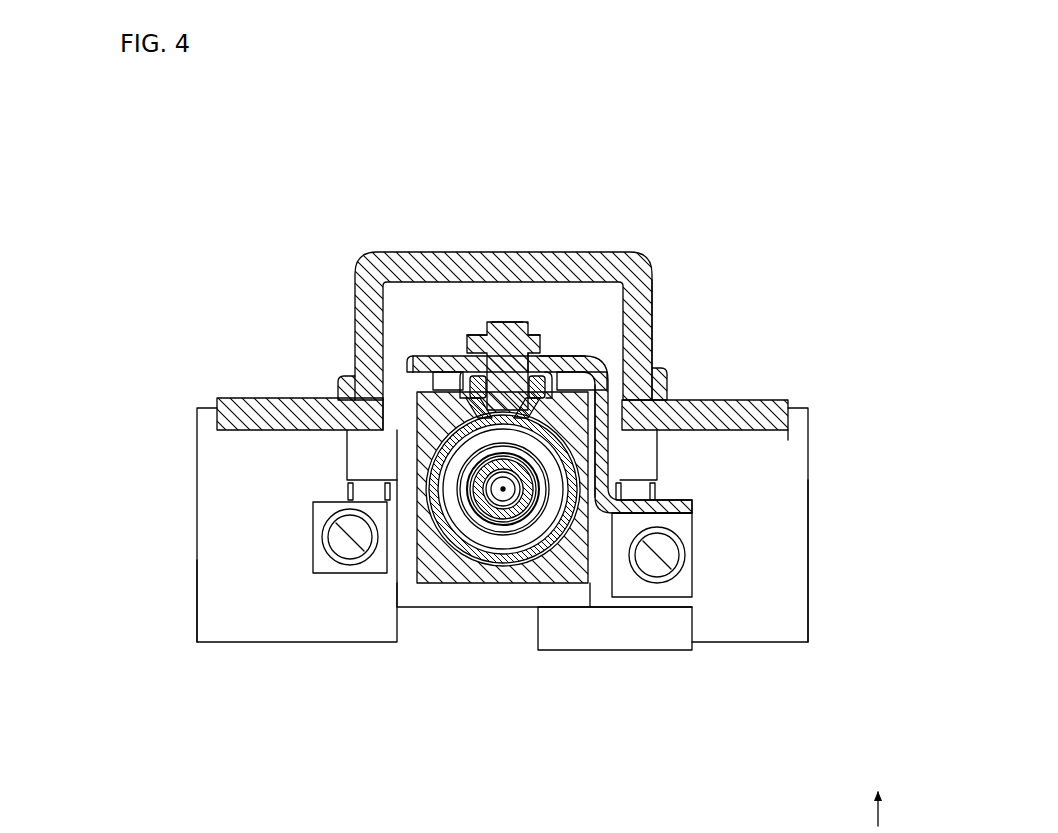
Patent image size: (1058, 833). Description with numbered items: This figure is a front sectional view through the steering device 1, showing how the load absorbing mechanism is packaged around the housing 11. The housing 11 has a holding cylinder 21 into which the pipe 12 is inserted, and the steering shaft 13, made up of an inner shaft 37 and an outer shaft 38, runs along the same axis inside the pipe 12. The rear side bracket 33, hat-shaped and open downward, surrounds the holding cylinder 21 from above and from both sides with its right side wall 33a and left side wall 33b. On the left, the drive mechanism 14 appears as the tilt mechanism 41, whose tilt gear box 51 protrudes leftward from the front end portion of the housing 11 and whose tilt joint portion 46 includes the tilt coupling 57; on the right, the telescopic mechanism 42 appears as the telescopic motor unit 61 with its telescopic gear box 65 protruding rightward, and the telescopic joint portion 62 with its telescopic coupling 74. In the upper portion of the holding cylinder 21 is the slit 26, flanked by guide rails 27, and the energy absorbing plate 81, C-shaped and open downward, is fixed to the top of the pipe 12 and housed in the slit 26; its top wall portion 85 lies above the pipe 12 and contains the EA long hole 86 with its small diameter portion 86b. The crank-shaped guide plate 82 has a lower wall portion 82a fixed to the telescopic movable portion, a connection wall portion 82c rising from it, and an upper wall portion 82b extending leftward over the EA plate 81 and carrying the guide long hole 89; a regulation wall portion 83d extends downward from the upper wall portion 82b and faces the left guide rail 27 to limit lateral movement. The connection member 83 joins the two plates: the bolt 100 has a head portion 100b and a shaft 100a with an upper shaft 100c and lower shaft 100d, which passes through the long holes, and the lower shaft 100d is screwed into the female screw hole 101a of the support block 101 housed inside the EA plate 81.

The steering device 1 is at (692, 126).
The housing 11 is at (431, 592).
The pipe 12 is at (440, 466).
The steering shaft 13 is at (577, 742).
The drive mechanism 14 is at (503, 578).
The holding cylinder 21 is at (590, 580).
The slit 26 is at (434, 372).
The guide rail 27 is at (470, 372).
The rear side bracket 33 is at (648, 252).
The right side wall 33a is at (652, 298).
The left side wall 33b is at (350, 380).
The inner shaft 37 is at (500, 520).
The outer shaft 38 is at (526, 525).
The tilt mechanism 41 is at (188, 465).
The telescopic mechanism 42 is at (818, 465).
The tilt joint portion 46 is at (313, 573).
The tilt gear box 51 is at (198, 605).
The tilt coupling 57 is at (273, 630).
The telescopic motor unit 61 is at (790, 548).
The telescopic joint portion 62 is at (680, 575).
The telescopic gear box 65 is at (877, 561).
The telescopic coupling 74 is at (771, 608).
The energy absorbing plate 81 is at (542, 380).
The guide plate 82 is at (612, 361).
The lower wall portion 82a is at (680, 506).
The upper wall portion 82b is at (558, 366).
The connection wall portion 82c is at (612, 402).
The connection member 83 is at (511, 316).
The regulation wall portion 83d is at (412, 376).
The top wall portion 85 is at (468, 390).
The EA long hole 86 is at (470, 500).
The small diameter portion 86b is at (430, 608).
The guide long hole 89 is at (498, 330).
The bolt 100 is at (470, 372).
The shaft 100a is at (553, 416).
The head portion 100b is at (490, 330).
The upper shaft 100c is at (478, 376).
The lower shaft 100d is at (522, 500).
The support block 101 is at (531, 370).
The female screw hole 101a is at (660, 516).